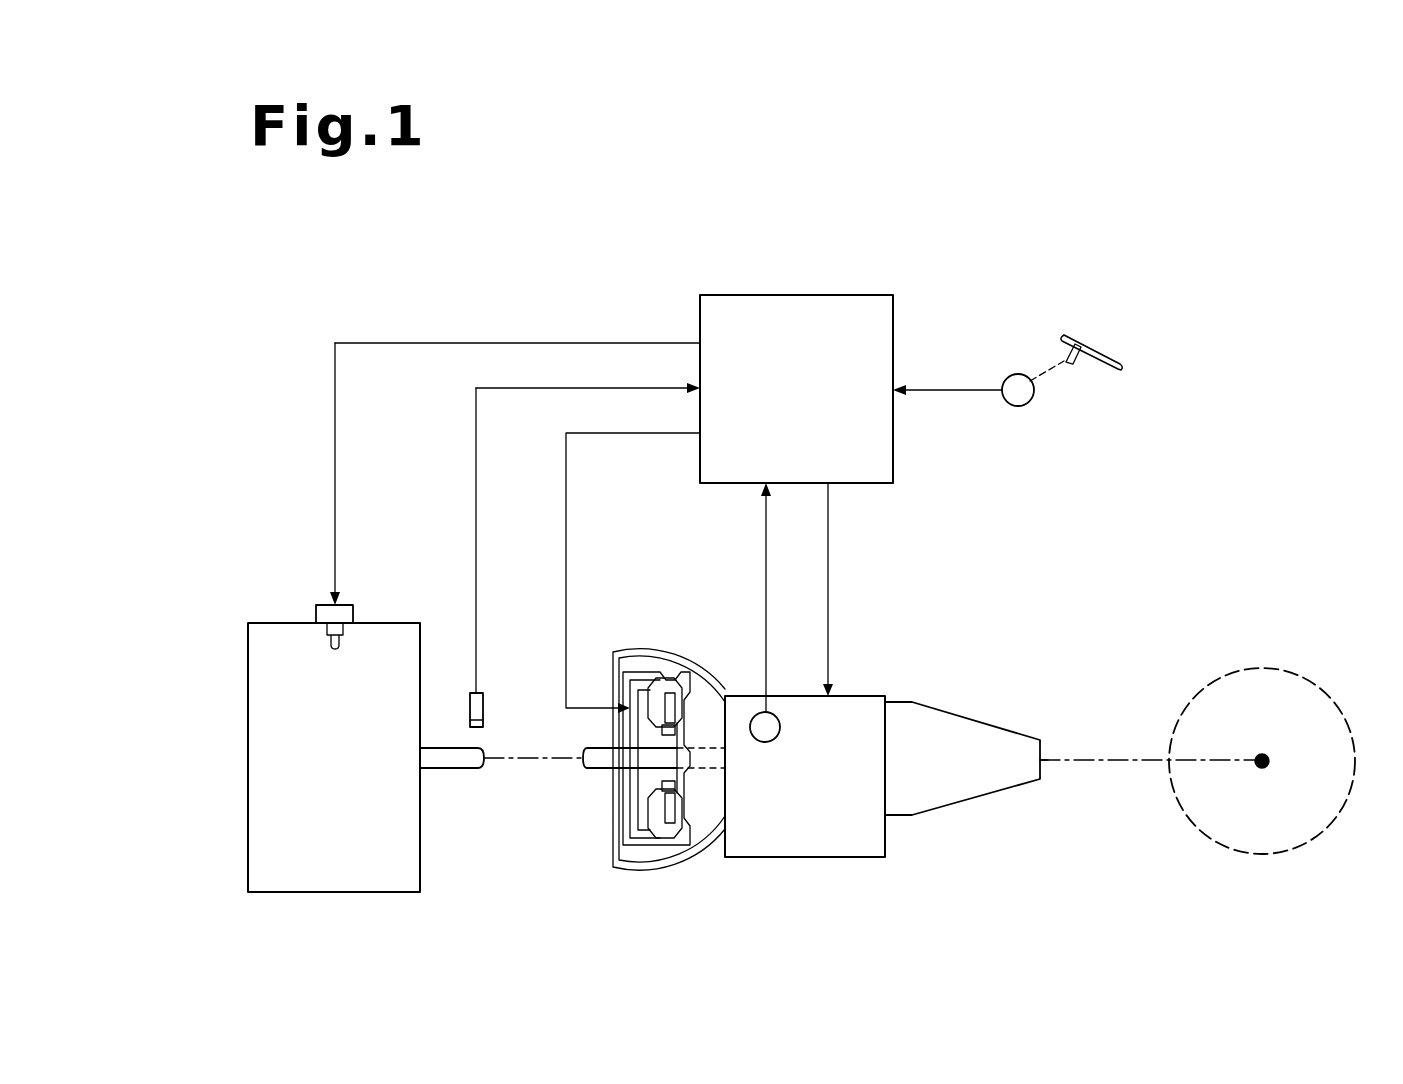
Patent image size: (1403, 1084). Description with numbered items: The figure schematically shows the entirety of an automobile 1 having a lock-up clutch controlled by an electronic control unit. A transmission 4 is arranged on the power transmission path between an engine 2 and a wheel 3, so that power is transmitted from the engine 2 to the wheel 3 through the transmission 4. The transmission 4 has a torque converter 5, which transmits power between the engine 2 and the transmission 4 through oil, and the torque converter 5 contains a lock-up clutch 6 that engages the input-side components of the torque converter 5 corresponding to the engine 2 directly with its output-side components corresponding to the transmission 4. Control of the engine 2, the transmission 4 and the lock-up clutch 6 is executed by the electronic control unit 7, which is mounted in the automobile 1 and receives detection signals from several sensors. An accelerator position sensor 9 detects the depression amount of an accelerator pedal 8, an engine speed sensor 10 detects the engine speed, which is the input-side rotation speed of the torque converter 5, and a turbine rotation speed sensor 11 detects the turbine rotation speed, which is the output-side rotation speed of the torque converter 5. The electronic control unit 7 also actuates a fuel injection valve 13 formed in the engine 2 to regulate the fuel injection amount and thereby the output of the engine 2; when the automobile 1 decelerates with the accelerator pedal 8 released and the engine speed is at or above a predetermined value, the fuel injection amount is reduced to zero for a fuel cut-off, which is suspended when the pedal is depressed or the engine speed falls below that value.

The automobile 1 is at (1018, 580).
The engine 2 is at (268, 623).
The wheel 3 is at (1234, 668).
The transmission 4 is at (865, 695).
The torque converter 5 is at (671, 672).
The lock-up clutch 6 is at (628, 690).
The electronic control unit 7 is at (800, 295).
The accelerator pedal 8 is at (1085, 341).
The accelerator position sensor 9 is at (1017, 374).
The engine speed sensor 10 is at (484, 710).
The turbine rotation speed sensor 11 is at (777, 738).
The fuel injection valve 13 is at (355, 608).